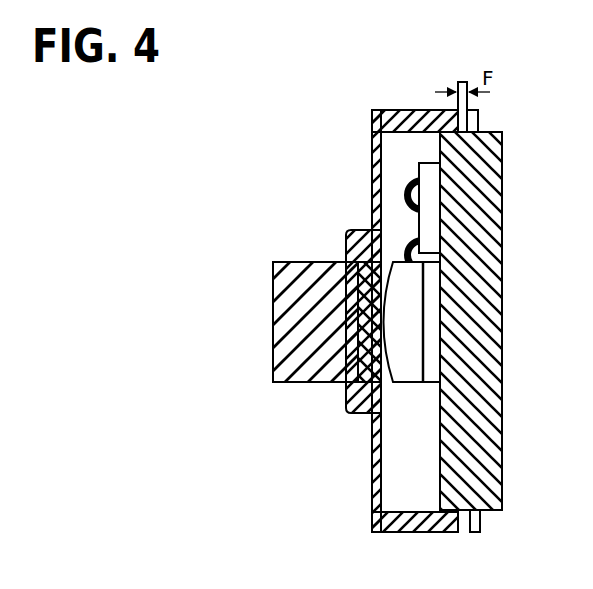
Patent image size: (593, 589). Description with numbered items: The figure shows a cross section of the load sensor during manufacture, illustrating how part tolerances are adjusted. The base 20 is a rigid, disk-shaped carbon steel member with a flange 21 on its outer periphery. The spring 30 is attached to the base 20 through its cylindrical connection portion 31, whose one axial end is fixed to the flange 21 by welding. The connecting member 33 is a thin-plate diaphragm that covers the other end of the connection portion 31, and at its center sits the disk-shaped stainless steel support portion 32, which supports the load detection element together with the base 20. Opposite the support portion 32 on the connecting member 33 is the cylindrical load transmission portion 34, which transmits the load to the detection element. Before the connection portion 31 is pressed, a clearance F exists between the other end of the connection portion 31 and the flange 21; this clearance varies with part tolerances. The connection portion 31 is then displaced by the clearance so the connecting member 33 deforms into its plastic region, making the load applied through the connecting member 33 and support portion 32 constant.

The base 20 is at (497, 318).
The flange 21 is at (470, 117).
The spring 30 is at (373, 274).
The connection portion 31 is at (420, 110).
The support portion 32 is at (344, 258).
The connecting member 33 is at (376, 178).
The load transmission portion 34 is at (290, 315).